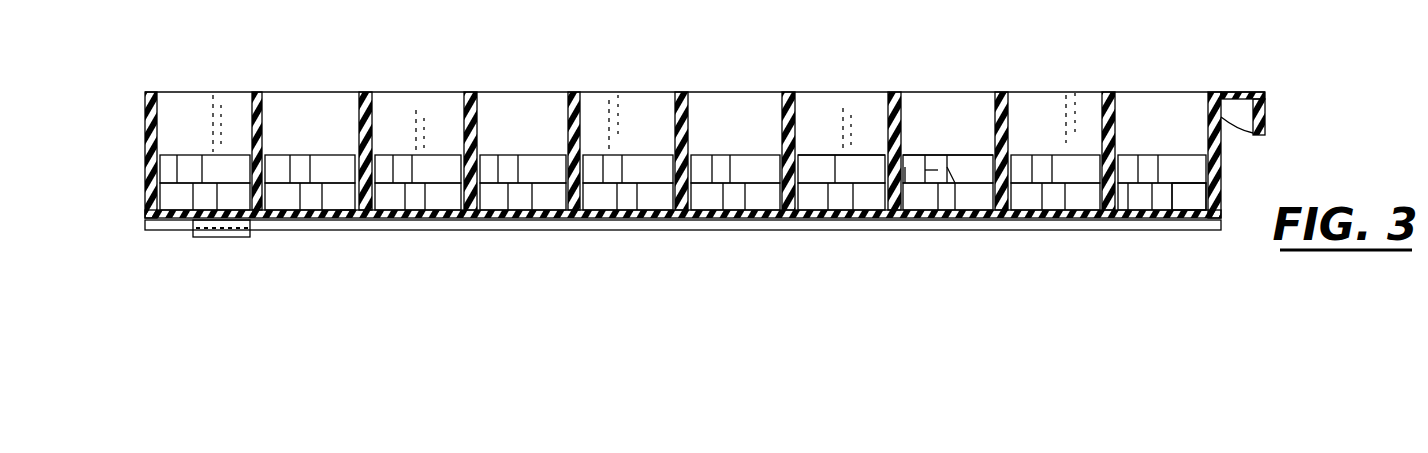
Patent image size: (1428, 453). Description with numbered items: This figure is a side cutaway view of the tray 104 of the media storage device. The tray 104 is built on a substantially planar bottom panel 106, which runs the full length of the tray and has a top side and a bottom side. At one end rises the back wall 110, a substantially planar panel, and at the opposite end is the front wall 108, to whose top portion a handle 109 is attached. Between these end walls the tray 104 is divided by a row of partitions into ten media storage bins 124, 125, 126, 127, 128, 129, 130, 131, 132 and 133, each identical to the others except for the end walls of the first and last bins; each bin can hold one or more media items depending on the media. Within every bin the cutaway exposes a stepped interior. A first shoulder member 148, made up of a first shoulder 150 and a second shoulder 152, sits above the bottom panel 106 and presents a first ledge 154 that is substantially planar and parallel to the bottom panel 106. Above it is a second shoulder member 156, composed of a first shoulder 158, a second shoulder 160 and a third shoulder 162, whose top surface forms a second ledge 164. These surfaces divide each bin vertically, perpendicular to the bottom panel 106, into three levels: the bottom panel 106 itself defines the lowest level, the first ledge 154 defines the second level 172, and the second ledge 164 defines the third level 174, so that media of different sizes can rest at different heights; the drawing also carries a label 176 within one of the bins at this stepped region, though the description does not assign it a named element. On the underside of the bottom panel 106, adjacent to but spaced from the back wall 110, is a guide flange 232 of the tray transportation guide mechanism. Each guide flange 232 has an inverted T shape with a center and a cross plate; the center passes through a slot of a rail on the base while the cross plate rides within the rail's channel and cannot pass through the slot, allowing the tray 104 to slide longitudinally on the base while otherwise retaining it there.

The tray 104 is at (497, 91).
The bottom panel 106 is at (552, 218).
The front wall 108 is at (1209, 112).
The handle 109 is at (1257, 93).
The back wall 110 is at (148, 122).
The media storage bin 124 is at (1148, 105).
The media storage bin 125 is at (1040, 107).
The media storage bin 126 is at (962, 107).
The media storage bin 127 is at (858, 102).
The media storage bin 128 is at (752, 105).
The media storage bin 129 is at (652, 110).
The media storage bin 130 is at (542, 122).
The media storage bin 131 is at (397, 105).
The media storage bin 132 is at (318, 115).
The media storage bin 133 is at (197, 118).
The first shoulder member 148 is at (1200, 193).
The first shoulder 150 is at (1187, 197).
The second shoulder 152 is at (1155, 197).
The first ledge 154 is at (1128, 183).
The second shoulder member 156 is at (933, 157).
The first shoulder 158 is at (947, 167).
The second shoulder 160 is at (928, 170).
The third shoulder 162 is at (905, 167).
The second ledge 164 is at (820, 155).
The second level 172 is at (343, 218).
The third level 174 is at (310, 183).
The component 176 is at (273, 160).
The guide flange 232 is at (227, 233).